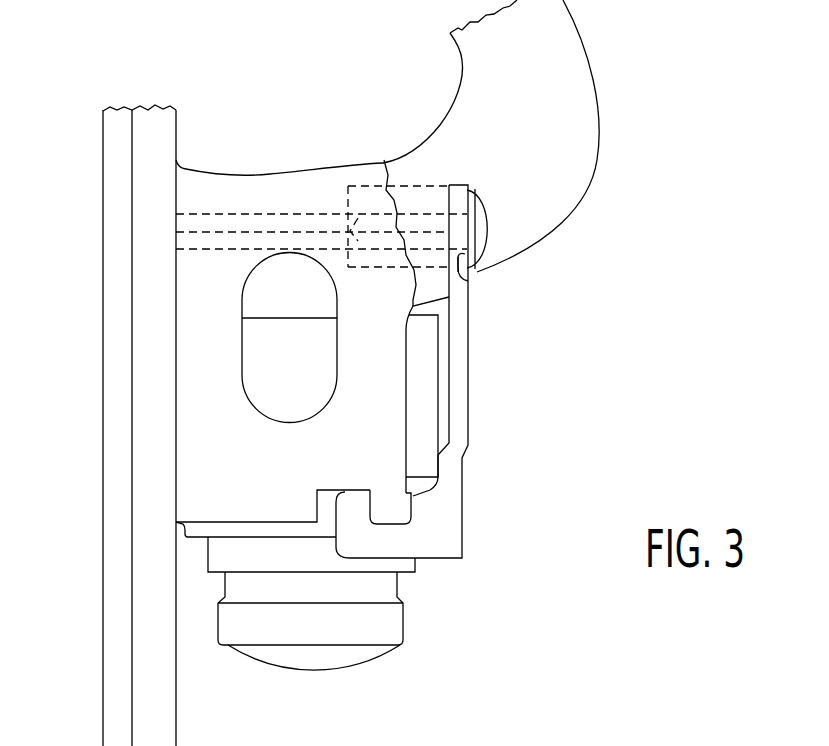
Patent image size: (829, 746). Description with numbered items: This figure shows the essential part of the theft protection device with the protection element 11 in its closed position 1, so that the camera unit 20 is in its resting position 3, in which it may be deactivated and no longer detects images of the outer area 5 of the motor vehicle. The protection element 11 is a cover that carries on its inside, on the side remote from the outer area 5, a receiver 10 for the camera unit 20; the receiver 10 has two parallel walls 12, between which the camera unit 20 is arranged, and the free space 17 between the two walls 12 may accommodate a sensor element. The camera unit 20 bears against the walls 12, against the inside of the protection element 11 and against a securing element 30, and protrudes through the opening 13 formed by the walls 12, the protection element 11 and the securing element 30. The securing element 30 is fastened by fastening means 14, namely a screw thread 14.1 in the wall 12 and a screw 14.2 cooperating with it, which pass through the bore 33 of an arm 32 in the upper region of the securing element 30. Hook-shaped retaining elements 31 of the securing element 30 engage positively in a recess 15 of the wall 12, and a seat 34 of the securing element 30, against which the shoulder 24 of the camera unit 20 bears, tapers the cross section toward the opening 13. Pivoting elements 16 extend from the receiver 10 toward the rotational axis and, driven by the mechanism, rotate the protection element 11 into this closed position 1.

The closed position 1 is at (297, 29).
The resting position 3 is at (297, 29).
The outer area 5 is at (80, 237).
The receiver 10 is at (273, 172).
The protection element 11 is at (112, 529).
The wall 12 is at (273, 312).
The opening 13 is at (267, 522).
The fastening means 14 is at (668, 165).
The screw thread 14.1 is at (447, 207).
The screw 14.2 is at (480, 229).
The recess 15 is at (327, 490).
The pivoting element 16 is at (540, 103).
The free space 17 is at (329, 695).
The camera unit 20 is at (392, 628).
The shoulder 24 is at (420, 485).
The securing element 30 is at (460, 398).
The retaining element 31 is at (352, 545).
The arm 32 is at (458, 292).
The bore 33 is at (470, 283).
The seat 34 is at (430, 488).